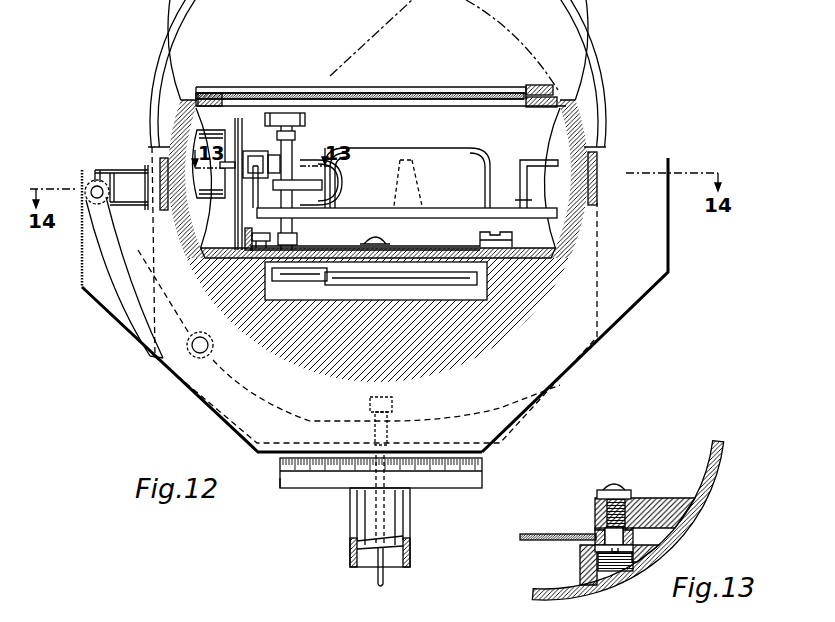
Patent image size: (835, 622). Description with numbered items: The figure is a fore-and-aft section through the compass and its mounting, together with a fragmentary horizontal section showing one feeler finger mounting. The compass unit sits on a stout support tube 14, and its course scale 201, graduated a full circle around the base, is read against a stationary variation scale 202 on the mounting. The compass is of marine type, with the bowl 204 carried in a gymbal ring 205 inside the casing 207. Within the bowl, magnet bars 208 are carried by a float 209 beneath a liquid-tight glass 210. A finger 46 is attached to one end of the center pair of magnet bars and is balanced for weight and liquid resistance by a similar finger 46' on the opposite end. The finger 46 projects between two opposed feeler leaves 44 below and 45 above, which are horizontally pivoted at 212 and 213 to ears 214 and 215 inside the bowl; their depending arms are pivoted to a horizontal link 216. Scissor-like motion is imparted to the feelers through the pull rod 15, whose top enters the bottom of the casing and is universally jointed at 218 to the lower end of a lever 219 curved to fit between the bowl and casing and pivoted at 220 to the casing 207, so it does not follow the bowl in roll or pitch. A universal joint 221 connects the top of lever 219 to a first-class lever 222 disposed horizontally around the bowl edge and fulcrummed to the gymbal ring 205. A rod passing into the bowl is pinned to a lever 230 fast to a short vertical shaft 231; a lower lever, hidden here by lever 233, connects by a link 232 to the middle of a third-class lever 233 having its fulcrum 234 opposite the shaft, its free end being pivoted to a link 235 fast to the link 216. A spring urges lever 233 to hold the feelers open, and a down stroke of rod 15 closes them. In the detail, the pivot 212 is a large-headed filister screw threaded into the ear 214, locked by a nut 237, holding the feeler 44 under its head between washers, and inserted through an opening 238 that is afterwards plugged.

In FIG. 12, the support tube 14 is at (407, 520).
In FIG. 12, the pull rod 15 is at (377, 582).
In FIG. 12, the lower feeler leaf 44 is at (246, 215).
In FIG. 13, the lower feeler leaf 44 is at (553, 534).
In FIG. 12, the upper feeler leaf 45 is at (232, 208).
In FIG. 12, the finger 46 is at (214, 164).
In FIG. 12, the balancing finger 46' is at (536, 171).
In FIG. 12, the course scale 201 is at (484, 463).
In FIG. 12, the variation scale 202 is at (281, 478).
In FIG. 12, the compass bowl 204 is at (573, 122).
In FIG. 13, the compass bowl 204 is at (706, 483).
In FIG. 12, the gymbal ring 205 is at (598, 161).
In FIG. 12, the compass casing 207 is at (638, 310).
In FIG. 12, the magnet bars 208 is at (502, 208).
In FIG. 12, the float 209 is at (438, 154).
In FIG. 12, the liquid-tight glass 210 is at (447, 94).
In FIG. 13, the pivot 212 is at (596, 531).
In FIG. 12, the pivot 213 is at (262, 156).
In FIG. 13, the ear 214 is at (662, 498).
In FIG. 12, the ear 215 is at (206, 127).
In FIG. 12, the horizontal link 216 is at (244, 237).
In FIG. 12, the universal joint 218 is at (394, 420).
In FIG. 12, the curved lever 219 is at (133, 305).
In FIG. 12, the lever pivot 220 is at (200, 341).
In FIG. 12, the universal joint 221 is at (97, 184).
In FIG. 12, the first-class lever 222 is at (131, 172).
In FIG. 12, the lever 230 is at (332, 182).
In FIG. 12, the vertical shaft 231 is at (297, 240).
In FIG. 12, the link 232 is at (376, 236).
In FIG. 12, the third-class lever 233 is at (313, 252).
In FIG. 12, the fulcrum 234 is at (506, 232).
In FIG. 12, the link 235 is at (272, 243).
In FIG. 12, the nut 237 is at (292, 158).
In FIG. 13, the nut 237 is at (604, 488).
In FIG. 13, the opening 238 is at (610, 566).